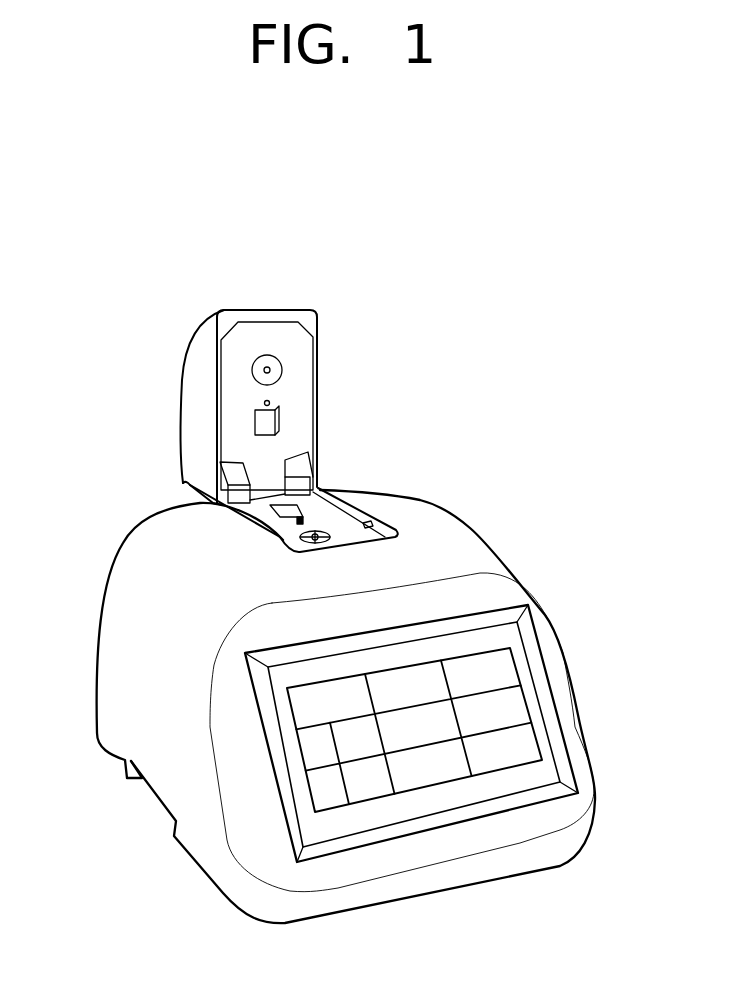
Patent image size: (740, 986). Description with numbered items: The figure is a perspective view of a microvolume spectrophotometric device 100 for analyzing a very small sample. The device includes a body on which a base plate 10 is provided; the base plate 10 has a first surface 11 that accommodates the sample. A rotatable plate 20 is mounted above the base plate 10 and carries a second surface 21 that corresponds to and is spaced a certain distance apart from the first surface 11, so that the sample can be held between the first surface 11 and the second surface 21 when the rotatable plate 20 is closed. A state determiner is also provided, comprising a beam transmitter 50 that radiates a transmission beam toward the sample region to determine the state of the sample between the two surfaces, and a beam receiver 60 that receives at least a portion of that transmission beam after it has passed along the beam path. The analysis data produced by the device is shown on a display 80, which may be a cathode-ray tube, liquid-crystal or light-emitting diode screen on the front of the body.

The microvolume spectrophotometric device 100 is at (114, 263).
The base plate 10 is at (342, 522).
The first surface 11 is at (317, 530).
The rotatable plate 20 is at (265, 317).
The second surface 21 is at (270, 370).
The beam transmitter 50 is at (280, 537).
The beam receiver 60 is at (368, 523).
The display 80 is at (527, 698).